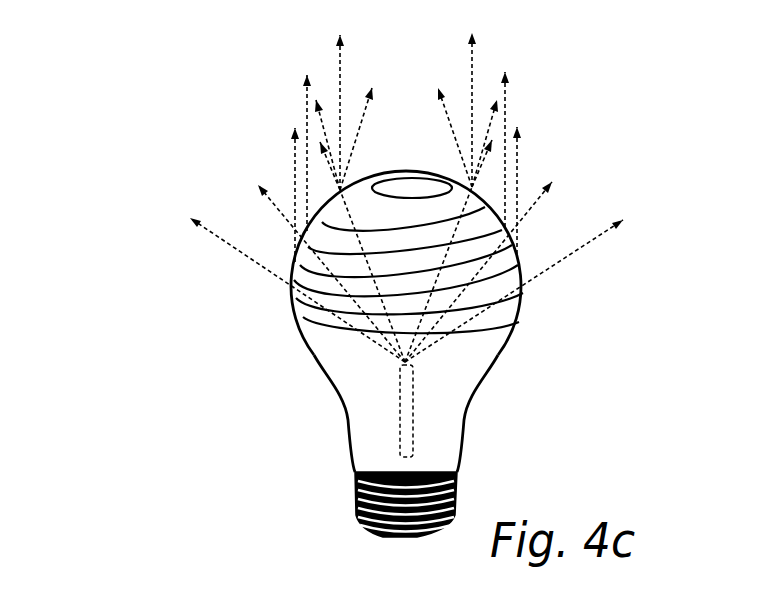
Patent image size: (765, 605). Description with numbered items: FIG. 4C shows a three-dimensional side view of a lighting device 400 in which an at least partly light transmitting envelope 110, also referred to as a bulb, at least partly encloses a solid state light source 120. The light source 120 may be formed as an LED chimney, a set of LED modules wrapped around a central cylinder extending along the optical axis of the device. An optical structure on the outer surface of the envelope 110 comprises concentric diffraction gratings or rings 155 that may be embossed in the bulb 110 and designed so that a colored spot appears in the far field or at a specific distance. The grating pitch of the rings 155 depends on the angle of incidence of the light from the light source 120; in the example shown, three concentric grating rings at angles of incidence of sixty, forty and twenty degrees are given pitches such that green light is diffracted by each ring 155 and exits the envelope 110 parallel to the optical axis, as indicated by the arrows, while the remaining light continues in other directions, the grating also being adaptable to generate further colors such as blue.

The lighting device 400 is at (138, 117).
The envelope 110 is at (503, 360).
The solid state light source 120 is at (398, 375).
The concentric diffraction gratings or rings 155 is at (413, 198).